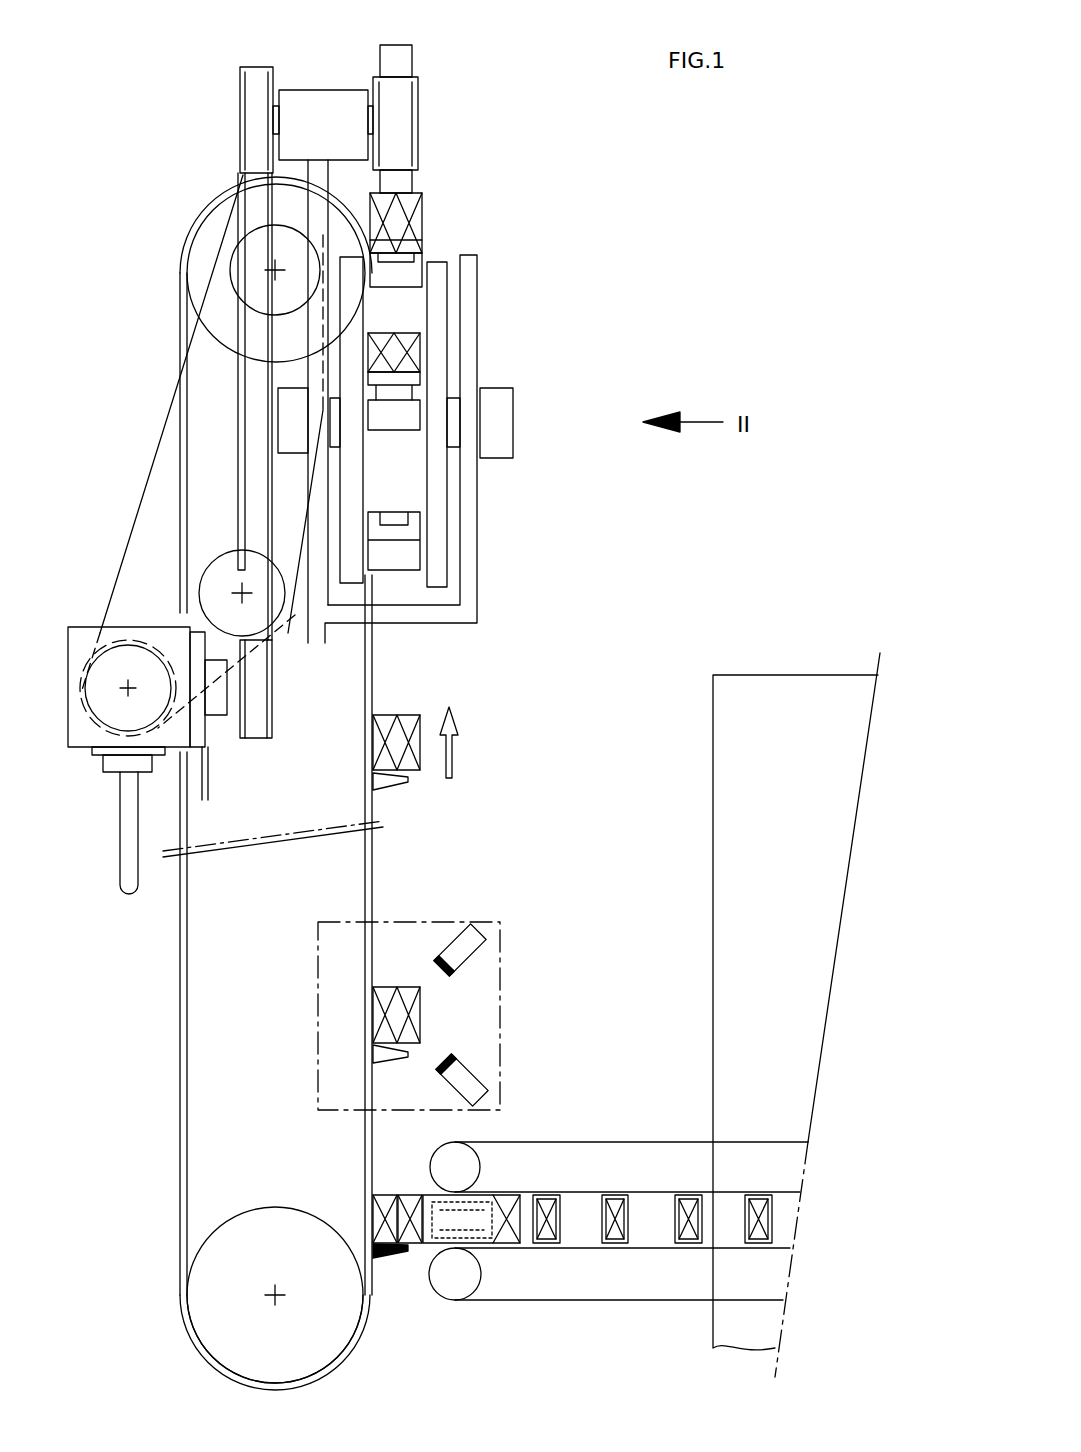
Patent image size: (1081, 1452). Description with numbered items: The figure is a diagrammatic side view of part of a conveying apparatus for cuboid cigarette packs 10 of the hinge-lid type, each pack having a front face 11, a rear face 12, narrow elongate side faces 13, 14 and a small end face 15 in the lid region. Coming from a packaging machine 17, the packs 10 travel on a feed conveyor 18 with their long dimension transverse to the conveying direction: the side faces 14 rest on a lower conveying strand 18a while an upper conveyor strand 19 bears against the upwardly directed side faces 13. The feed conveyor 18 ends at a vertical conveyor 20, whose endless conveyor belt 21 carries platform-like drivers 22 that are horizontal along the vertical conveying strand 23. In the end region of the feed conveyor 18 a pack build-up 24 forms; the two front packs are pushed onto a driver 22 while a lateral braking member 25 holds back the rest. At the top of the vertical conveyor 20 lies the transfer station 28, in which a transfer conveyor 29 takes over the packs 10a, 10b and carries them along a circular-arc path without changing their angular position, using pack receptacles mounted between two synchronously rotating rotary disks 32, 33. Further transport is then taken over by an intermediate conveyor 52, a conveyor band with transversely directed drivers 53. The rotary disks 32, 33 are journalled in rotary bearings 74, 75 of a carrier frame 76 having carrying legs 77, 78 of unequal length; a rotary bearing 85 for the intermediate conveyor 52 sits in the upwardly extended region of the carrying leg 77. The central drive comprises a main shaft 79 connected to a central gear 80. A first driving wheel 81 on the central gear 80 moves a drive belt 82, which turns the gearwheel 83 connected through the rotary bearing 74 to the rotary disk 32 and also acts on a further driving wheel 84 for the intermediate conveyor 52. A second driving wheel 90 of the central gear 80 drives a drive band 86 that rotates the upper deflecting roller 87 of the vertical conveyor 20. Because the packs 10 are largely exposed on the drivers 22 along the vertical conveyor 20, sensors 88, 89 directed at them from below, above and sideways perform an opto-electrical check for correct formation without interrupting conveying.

The packs 10 is at (615, 1195).
The pack 10a is at (385, 716).
The pack 10b is at (410, 770).
The front face 11 is at (660, 1237).
The rear face 12 is at (702, 1240).
The side face 13 is at (616, 1195).
The side face 14 is at (685, 1240).
The end face 15 is at (614, 1243).
The packaging machine 17 is at (791, 660).
The feed conveyor 18 is at (568, 1302).
The lower conveying strand 18a is at (522, 1252).
The upper conveyor strand 19 is at (672, 1142).
The vertical conveyor 20 is at (435, 850).
The conveyor belt 21 is at (170, 1047).
The drivers 22 is at (382, 790).
The vertical conveying strand 23 is at (372, 668).
The pack build-up 24 is at (426, 1248).
The lateral braking member 25 is at (490, 1205).
The transfer station 28 is at (506, 85).
The transfer conveyor 29 is at (517, 326).
The rotary disk 32 is at (358, 493).
The rotary disk 33 is at (445, 355).
The intermediate conveyor 52 is at (445, 122).
The drivers 53 is at (402, 62).
The rotary bearing 74 is at (285, 428).
The rotary bearing 75 is at (497, 425).
The carrier frame 76 is at (505, 548).
The carrying leg 77 is at (322, 490).
The carrying leg 78 is at (466, 275).
The main shaft 79 is at (125, 878).
The central gear 80 is at (80, 728).
The first driving wheel 81 is at (273, 697).
The drive belt 82 is at (248, 272).
The gearwheel 83 is at (240, 380).
The driving wheel 84 is at (240, 118).
The rotary bearing 85 is at (342, 106).
The drive band 86 is at (128, 602).
The upper deflecting roller 87 is at (208, 242).
The sensor 88 is at (470, 942).
The sensor 89 is at (480, 1086).
The second driving wheel 90 is at (105, 706).